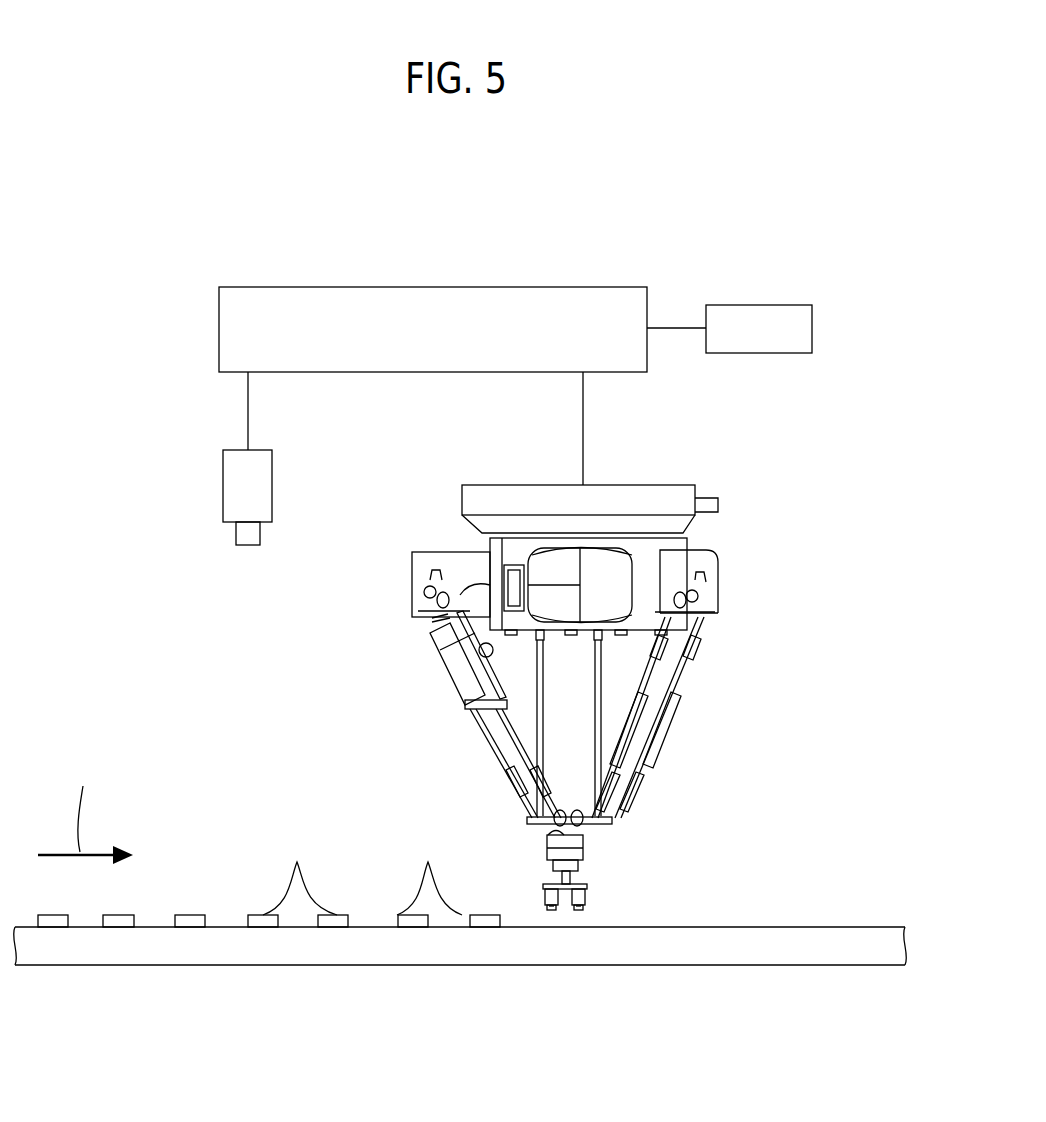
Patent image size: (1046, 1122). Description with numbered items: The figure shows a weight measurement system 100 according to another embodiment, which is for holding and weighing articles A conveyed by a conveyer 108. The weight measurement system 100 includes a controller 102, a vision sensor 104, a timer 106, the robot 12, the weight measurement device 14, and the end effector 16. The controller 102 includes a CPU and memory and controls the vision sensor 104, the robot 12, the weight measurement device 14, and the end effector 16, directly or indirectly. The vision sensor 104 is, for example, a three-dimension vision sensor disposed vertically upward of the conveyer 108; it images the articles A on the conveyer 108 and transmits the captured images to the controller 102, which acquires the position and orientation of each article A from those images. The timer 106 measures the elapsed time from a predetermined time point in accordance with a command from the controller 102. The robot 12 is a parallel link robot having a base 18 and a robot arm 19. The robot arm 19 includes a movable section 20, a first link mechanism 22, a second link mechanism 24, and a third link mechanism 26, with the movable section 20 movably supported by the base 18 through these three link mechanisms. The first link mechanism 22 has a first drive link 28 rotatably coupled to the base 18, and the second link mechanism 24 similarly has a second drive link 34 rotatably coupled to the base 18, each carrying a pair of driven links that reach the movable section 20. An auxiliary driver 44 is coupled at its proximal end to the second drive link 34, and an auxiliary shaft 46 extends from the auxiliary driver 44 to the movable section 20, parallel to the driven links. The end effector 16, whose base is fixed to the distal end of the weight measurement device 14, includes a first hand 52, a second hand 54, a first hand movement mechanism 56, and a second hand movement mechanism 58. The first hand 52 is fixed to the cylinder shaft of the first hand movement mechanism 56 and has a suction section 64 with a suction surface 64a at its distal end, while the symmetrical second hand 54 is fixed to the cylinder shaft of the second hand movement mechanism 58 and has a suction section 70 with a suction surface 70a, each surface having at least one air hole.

The weight measurement system 100 is at (127, 157).
The controller 102 is at (558, 287).
The vision sensor 104 is at (223, 470).
The timer 106 is at (786, 305).
The conveyer 108 is at (177, 965).
The robot 12 is at (595, 752).
The weight measurement device 14 is at (587, 898).
The end effector 16 is at (587, 937).
The base 18 is at (616, 563).
The robot arm 19 is at (581, 714).
The movable section 20 is at (527, 833).
The first link mechanism 22 is at (676, 726).
The second link mechanism 24 is at (460, 714).
The third link mechanism 26 is at (590, 676).
The first drive link 28 is at (676, 592).
The second drive link 34 is at (465, 585).
The auxiliary driver 44 is at (445, 662).
The auxiliary shaft 46 is at (485, 728).
The first hand 52 is at (602, 889).
The second hand 54 is at (540, 893).
The first hand movement mechanism 56 is at (592, 870).
The second hand movement mechanism 58 is at (548, 862).
The suction section 64 is at (584, 906).
The suction surface 64a is at (579, 911).
The suction section 70 is at (546, 910).
The suction surface 70a is at (561, 911).